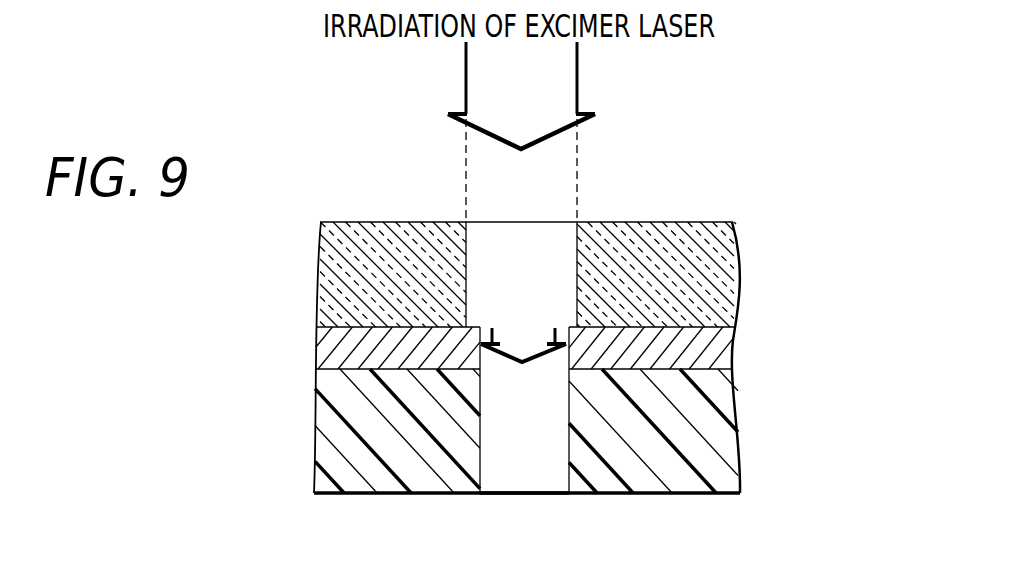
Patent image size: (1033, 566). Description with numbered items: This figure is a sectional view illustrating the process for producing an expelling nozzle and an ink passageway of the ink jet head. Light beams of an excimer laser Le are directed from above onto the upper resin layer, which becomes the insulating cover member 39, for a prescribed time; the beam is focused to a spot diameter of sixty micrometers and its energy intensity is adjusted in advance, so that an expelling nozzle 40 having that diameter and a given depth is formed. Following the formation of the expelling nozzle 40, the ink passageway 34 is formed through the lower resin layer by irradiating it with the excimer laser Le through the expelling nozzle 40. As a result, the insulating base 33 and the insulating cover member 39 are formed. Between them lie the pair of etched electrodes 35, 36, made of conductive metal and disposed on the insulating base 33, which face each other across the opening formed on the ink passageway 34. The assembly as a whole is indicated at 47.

The excimer laser Le is at (568, 83).
The insulating base 33 is at (320, 443).
The ink passageway 34 is at (530, 494).
The etched electrode 35 is at (316, 352).
The etched electrode 36 is at (732, 348).
The insulating cover member 39 is at (321, 277).
The expelling nozzle 40 is at (548, 231).
The laminated structure 47 is at (781, 214).